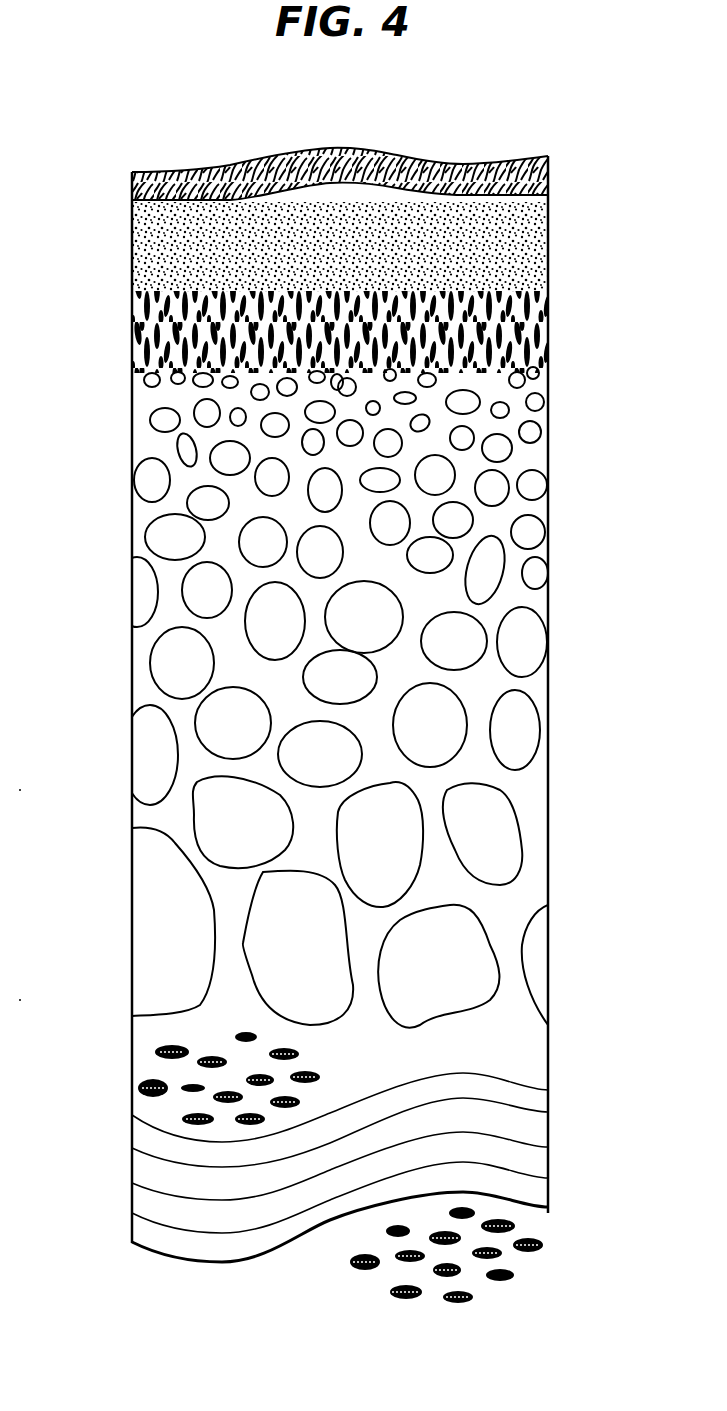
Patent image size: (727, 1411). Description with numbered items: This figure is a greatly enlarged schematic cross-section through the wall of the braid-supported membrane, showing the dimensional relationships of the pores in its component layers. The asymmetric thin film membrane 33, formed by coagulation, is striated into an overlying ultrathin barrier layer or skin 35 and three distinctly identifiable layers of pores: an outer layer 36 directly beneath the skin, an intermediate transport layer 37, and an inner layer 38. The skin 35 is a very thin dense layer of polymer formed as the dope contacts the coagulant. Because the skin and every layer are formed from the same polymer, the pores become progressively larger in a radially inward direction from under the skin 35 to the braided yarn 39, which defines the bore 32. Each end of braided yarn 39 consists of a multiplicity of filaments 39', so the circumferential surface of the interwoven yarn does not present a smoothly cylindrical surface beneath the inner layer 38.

The bore 32 is at (338, 1378).
The asymmetric thin film membrane 33 is at (566, 609).
The ultrathin barrier layer or skin 35 is at (555, 157).
The outer layer 36 is at (120, 200).
The intermediate transport layer 37 is at (120, 298).
The inner layer 38 is at (120, 365).
The braided yarn 39 is at (179, 1078).
The filaments 39' is at (428, 1277).